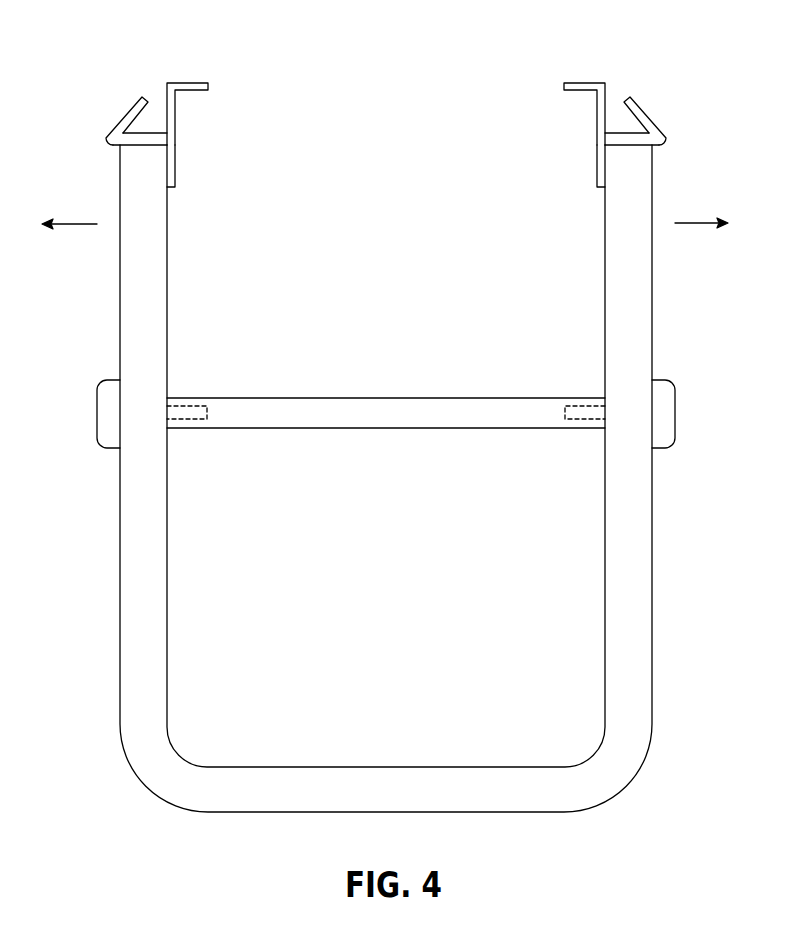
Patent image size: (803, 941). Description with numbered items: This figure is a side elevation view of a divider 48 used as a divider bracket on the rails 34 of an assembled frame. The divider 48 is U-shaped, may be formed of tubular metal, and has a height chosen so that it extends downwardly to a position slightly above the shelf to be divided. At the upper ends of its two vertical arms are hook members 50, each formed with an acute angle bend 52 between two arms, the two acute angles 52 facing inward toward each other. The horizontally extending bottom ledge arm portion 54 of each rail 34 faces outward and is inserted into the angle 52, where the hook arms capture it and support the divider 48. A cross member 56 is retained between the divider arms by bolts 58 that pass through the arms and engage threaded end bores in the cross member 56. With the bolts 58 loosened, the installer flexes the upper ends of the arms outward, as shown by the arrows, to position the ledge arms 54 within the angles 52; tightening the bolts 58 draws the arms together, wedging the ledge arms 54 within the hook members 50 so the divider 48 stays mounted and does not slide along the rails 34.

The rail 34 is at (195, 81).
The divider 48 is at (684, 320).
The hook member 50 is at (175, 168).
The acute angle bend 52 is at (143, 122).
The bottom ledge arm portion 54 is at (148, 130).
The cross member 56 is at (386, 397).
The bolt 58 is at (100, 437).